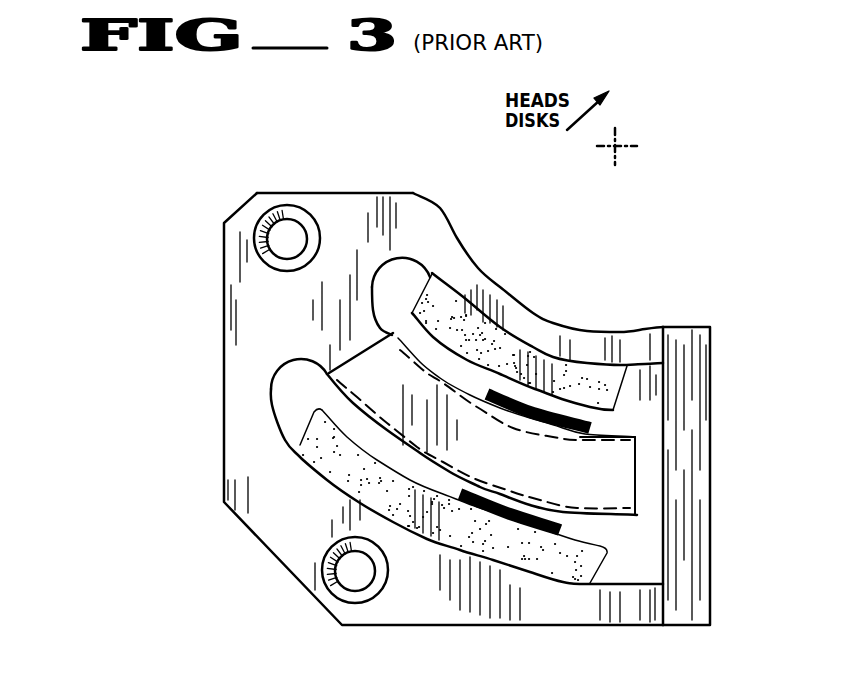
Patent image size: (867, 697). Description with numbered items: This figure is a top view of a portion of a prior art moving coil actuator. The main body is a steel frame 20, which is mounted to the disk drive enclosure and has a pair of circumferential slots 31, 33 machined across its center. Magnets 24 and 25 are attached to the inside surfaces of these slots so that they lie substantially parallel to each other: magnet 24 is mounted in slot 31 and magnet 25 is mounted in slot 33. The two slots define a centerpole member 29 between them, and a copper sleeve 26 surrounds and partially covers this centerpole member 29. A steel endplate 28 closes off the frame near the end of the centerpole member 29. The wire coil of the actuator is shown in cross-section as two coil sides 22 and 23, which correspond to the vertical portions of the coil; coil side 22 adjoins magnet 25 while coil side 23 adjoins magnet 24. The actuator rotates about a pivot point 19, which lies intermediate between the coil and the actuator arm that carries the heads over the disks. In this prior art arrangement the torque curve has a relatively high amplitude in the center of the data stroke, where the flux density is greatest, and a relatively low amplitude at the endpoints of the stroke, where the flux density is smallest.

The pivot point 19 is at (617, 147).
The steel frame 20 is at (224, 272).
The coil side 22 is at (570, 367).
The coil side 23 is at (518, 522).
The magnet 24 is at (571, 575).
The magnet 25 is at (523, 357).
The copper sleeve 26 is at (357, 357).
The steel endplate 28 is at (712, 378).
The centerpole member 29 is at (399, 332).
The slot 31 is at (270, 382).
The slot 33 is at (383, 276).